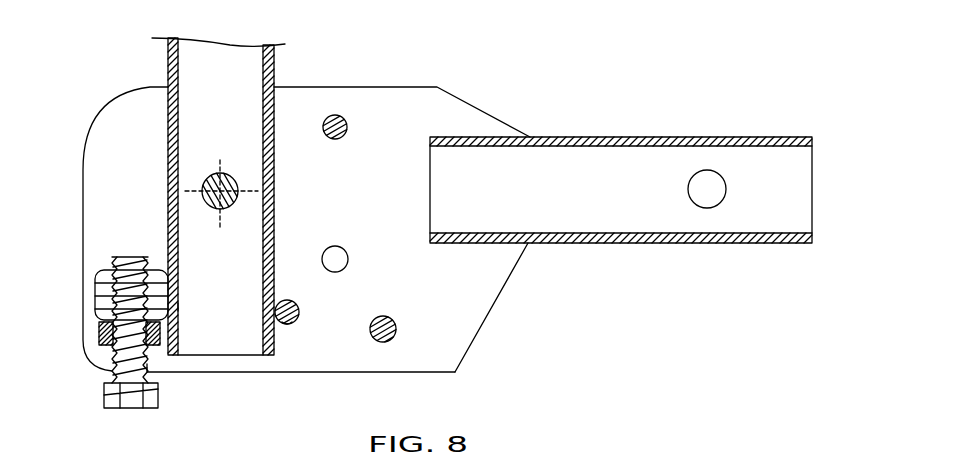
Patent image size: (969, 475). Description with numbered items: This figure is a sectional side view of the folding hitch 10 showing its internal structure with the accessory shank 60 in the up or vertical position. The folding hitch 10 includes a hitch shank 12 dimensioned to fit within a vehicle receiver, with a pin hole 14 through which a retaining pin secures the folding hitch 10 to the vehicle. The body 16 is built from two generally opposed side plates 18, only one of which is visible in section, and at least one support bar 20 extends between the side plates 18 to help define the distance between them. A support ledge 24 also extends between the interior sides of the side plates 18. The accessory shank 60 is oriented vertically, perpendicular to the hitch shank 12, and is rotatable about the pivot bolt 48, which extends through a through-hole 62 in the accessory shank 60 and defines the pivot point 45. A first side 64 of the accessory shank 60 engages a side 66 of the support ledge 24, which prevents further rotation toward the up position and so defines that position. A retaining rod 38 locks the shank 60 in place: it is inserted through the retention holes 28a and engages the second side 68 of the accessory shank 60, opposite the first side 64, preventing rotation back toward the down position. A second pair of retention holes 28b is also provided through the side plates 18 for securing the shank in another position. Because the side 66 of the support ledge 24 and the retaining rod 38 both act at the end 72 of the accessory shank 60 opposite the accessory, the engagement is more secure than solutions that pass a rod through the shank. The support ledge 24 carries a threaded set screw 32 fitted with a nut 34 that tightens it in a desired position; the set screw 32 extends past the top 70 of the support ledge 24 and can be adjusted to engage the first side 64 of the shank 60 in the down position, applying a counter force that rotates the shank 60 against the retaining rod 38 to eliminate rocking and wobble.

The folding hitch 10 is at (510, 88).
The hitch shank 12 is at (620, 137).
The pin hole 14 is at (694, 188).
The body 16 is at (370, 99).
The side plate 18 is at (497, 308).
The support bar 20 is at (345, 136).
The support ledge 24 is at (96, 290).
The retention holes 28a is at (298, 308).
The retention holes 28b is at (345, 265).
The set screw 32 is at (112, 352).
The nut 34 is at (100, 333).
The retaining rod 38 is at (290, 324).
The pivot point 45 is at (236, 175).
The pivot bolt 48 is at (215, 175).
The accessory shank 60 is at (232, 196).
The through-hole 62 is at (216, 208).
The first side 64 is at (168, 226).
The side of the support ledge 66 is at (178, 307).
The second side 68 is at (275, 220).
The top of the support ledge 70 is at (108, 270).
The end 72 is at (216, 338).